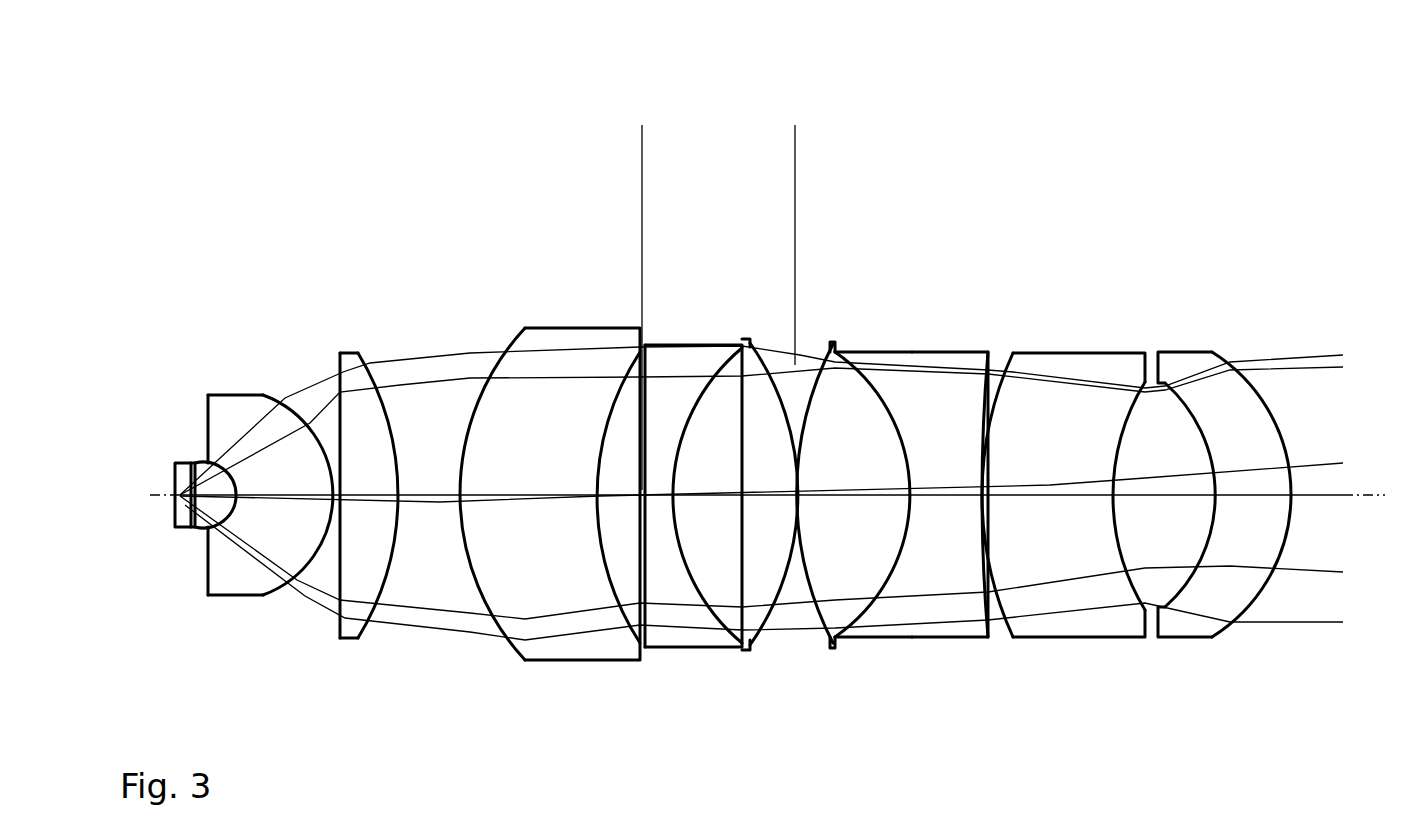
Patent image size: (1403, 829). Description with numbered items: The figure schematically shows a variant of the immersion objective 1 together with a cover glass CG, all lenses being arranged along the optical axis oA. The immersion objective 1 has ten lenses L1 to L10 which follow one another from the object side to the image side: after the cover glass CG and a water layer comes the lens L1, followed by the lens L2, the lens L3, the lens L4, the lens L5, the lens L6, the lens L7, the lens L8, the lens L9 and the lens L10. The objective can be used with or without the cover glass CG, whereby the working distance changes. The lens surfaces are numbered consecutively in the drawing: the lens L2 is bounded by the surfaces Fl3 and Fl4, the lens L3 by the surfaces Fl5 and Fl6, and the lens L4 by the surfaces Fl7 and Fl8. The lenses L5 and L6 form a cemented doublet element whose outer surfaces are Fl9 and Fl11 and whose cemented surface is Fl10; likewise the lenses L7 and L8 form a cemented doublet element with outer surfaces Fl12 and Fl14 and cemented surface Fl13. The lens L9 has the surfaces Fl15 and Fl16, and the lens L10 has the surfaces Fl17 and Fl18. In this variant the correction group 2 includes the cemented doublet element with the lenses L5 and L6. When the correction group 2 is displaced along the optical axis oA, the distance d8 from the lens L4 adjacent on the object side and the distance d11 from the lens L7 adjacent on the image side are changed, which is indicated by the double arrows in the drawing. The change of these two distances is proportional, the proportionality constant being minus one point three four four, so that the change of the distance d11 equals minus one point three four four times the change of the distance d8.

The immersion objective 1 is at (946, 150).
The correction group 2 is at (706, 158).
The cover glass CG is at (192, 458).
The optical axis oA is at (1383, 497).
The distance d8 is at (641, 276).
The distance d11 is at (793, 214).
The lens L1 is at (202, 524).
The lens L2 is at (241, 595).
The lens L3 is at (349, 638).
The lens L4 is at (585, 660).
The lens L5 is at (690, 648).
The lens L6 is at (751, 650).
The lens L7 is at (832, 648).
The lens L8 is at (921, 637).
The lens L9 is at (1083, 637).
The lens L10 is at (1183, 637).
The surface 3 Fl3 is at (232, 480).
The surface 4 Fl4 is at (282, 396).
The surface 5 Fl5 is at (339, 356).
The surface 6 Fl6 is at (366, 360).
The surface 7 Fl7 is at (520, 340).
The surface 8 Fl8 is at (613, 403).
The surface 9 Fl9 is at (636, 434).
The surface 10 Fl10 is at (688, 433).
The surface 11 Fl11 is at (787, 398).
The surface 12 Fl12 is at (800, 445).
The surface 13 Fl13 is at (898, 442).
The surface 14 Fl14 is at (996, 417).
The surface 15 Fl15 is at (991, 410).
The surface 16 Fl16 is at (1152, 392).
The surface 17 Fl17 is at (1212, 460).
The surface 18 Fl18 is at (1282, 428).